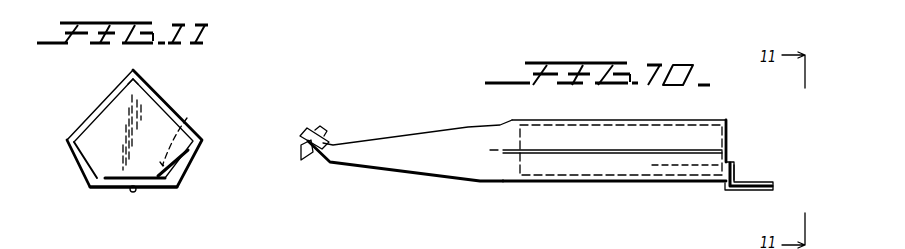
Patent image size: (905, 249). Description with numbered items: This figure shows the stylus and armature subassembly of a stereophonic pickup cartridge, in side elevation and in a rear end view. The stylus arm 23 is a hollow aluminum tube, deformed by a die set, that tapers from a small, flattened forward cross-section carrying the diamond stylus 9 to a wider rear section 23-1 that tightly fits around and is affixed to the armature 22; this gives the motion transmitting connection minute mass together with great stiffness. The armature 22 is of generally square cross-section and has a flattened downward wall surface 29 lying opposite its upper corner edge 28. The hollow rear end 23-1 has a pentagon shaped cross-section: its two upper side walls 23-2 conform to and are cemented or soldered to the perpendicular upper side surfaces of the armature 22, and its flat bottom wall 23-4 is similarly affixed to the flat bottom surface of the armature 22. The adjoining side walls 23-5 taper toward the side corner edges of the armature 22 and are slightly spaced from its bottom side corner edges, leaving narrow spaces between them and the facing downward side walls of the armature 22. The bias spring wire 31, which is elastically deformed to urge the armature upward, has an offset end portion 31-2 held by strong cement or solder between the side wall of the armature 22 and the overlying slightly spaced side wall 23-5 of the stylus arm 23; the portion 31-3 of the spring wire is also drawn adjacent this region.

In FIG. 10, the stylus 9 is at (307, 163).
In FIG. 11, the armature 22 is at (113, 122).
In FIG. 10, the armature 22 is at (727, 137).
In FIG. 10, the stylus arm 23 is at (402, 172).
In FIG. 10, the rear section of stylus arm 23-1 is at (705, 119).
In FIG. 11, the upper side walls 23-2 is at (113, 78).
In FIG. 10, the upper side walls 23-2 is at (562, 163).
In FIG. 11, the bottom wall 23-4 is at (90, 189).
In FIG. 10, the bottom wall 23-4 is at (618, 184).
In FIG. 11, the side walls 23-5 is at (75, 161).
In FIG. 11, the upper corner edge 28 is at (135, 80).
In FIG. 11, the flattened downward wall surface 29 is at (115, 182).
In FIG. 11, the spring wire member 31 is at (133, 193).
In FIG. 10, the spring wire member 31 is at (744, 191).
In FIG. 11, the offset end portion 31-2 is at (198, 152).
In FIG. 10, the offset end portion 31-2 is at (690, 148).
In FIG. 11, the clip leg 31-3 is at (193, 124).
In FIG. 10, the clip leg 31-3 is at (736, 171).